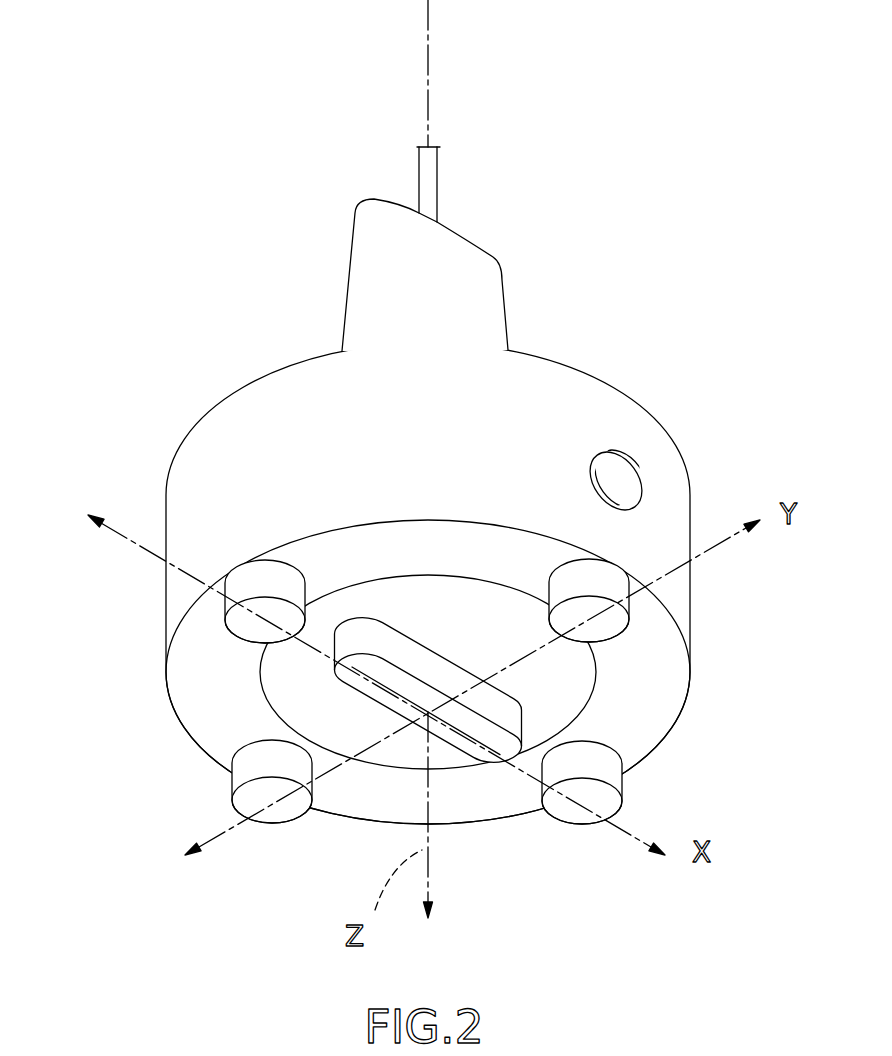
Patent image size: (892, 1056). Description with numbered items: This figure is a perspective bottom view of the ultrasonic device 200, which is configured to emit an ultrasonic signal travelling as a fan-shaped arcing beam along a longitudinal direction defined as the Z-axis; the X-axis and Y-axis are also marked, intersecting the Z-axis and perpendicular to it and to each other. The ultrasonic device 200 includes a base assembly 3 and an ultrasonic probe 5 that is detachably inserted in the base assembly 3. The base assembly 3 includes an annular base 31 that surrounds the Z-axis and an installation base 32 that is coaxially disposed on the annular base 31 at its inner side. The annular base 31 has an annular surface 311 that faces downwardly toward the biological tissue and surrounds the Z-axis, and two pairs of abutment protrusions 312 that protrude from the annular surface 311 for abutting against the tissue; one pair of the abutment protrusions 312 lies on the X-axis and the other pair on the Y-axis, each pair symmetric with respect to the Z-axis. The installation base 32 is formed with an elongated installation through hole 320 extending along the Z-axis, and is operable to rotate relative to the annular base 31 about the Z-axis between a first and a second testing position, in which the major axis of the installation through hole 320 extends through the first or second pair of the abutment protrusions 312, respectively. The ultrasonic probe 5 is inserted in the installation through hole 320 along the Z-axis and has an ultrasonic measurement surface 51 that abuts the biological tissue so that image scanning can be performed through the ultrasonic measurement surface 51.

The ultrasonic device 200 is at (537, 322).
The base assembly 3 is at (378, 561).
The annular base 31 is at (260, 403).
The annular surface 311 is at (378, 575).
The abutment protrusions 312 is at (585, 612).
The installation base 32 is at (482, 608).
The installation through hole 320 is at (511, 587).
The ultrasonic probe 5 is at (357, 252).
The ultrasonic measurement surface 51 is at (465, 748).